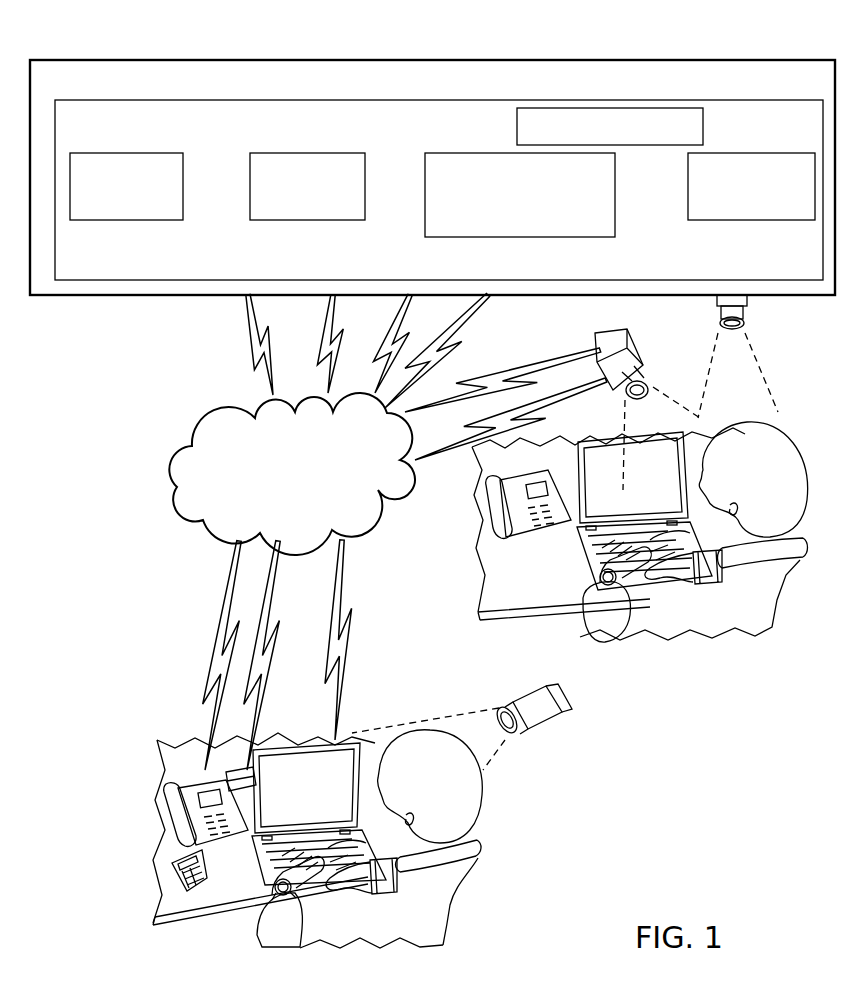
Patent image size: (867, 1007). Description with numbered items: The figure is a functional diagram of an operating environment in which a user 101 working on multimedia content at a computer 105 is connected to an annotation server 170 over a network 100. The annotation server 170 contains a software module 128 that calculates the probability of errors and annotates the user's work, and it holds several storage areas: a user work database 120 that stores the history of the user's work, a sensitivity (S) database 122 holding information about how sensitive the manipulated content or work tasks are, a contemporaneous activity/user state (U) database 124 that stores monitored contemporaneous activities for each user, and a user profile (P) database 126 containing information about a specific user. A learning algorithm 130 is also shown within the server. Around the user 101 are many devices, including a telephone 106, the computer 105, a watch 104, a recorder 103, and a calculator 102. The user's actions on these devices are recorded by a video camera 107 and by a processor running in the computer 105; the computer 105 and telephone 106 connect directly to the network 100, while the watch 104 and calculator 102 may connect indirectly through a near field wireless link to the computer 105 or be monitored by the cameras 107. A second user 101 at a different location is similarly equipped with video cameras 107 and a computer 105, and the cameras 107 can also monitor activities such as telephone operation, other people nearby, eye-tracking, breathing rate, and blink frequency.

The network 100 is at (170, 425).
The user 101 is at (705, 640).
The calculator 102 is at (168, 880).
The recorder 103 is at (226, 774).
The watch 104 is at (272, 883).
The computer 105 is at (580, 468).
The telephone 106 is at (487, 500).
The video camera 107 is at (552, 718).
The user work database 120 is at (157, 220).
The sensitivity (S) database 122 is at (335, 220).
The contemporaneous activity/user state (U) database 124 is at (615, 222).
The user profile (P) database 126 is at (776, 220).
The software module 128 is at (785, 100).
The learning algorithm 130 is at (703, 127).
The annotation server 170 is at (713, 60).